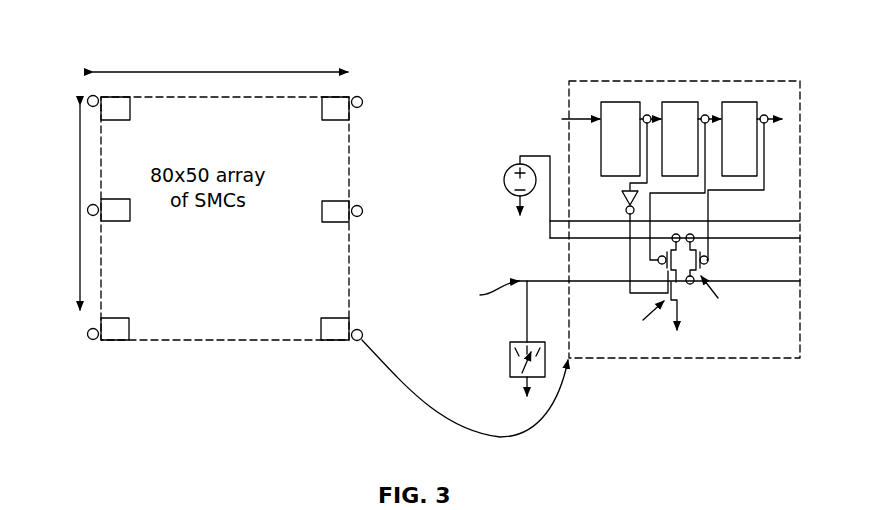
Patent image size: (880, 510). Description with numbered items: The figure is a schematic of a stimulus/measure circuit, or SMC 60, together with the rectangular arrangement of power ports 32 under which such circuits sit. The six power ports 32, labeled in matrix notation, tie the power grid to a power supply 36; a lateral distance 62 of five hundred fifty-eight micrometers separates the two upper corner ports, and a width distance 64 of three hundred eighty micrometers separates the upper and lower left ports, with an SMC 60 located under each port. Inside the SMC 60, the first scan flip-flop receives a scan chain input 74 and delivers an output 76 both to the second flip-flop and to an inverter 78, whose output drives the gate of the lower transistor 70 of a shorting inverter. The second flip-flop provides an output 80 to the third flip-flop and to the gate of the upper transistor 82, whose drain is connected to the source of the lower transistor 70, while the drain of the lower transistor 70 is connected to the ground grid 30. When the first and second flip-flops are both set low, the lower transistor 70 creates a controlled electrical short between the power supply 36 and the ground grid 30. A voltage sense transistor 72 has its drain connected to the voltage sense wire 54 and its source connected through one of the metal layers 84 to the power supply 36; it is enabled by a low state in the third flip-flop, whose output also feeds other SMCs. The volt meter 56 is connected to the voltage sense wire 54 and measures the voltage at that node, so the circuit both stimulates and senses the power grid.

The ground grid 30 is at (672, 312).
The power ports 32 is at (88, 338).
The power supply 36 is at (511, 192).
The voltage sense wire 54 is at (527, 304).
The volt meter 56 is at (510, 377).
The stimulus/measure circuit (SMC) 60 is at (93, 341).
The lateral distance 62 is at (258, 72).
The width distance 64 is at (80, 165).
The lower transistor 70 is at (668, 308).
The voltage sense transistor 72 is at (700, 268).
The scan chain input 74 is at (570, 112).
The output of flip-flop FF1 76 is at (647, 115).
The inverter 78 is at (621, 197).
The output of flip-flop FF2 80 is at (705, 115).
The upper transistor 82 is at (670, 276).
The metal layers M1 to M10 84 is at (800, 221).